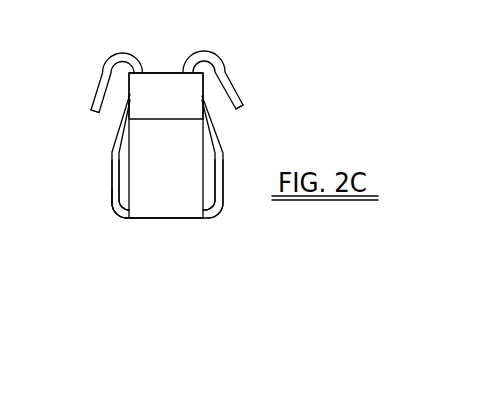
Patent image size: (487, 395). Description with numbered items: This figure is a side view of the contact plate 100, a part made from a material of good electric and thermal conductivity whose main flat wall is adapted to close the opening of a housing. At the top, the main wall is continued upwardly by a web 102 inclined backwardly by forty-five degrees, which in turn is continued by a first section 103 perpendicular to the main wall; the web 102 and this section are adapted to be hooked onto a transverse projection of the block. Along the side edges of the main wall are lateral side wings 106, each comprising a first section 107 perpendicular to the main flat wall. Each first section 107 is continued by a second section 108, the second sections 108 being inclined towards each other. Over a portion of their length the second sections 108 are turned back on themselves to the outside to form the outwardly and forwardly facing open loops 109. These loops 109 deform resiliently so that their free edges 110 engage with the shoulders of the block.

The contact plate 100 is at (204, 220).
The web 102 is at (163, 192).
The first section 103 is at (161, 97).
The lateral side wing 106 is at (105, 200).
The first section 107 is at (117, 183).
The second section 108 is at (114, 145).
The loop 109 is at (101, 77).
The free edge 110 is at (90, 113).